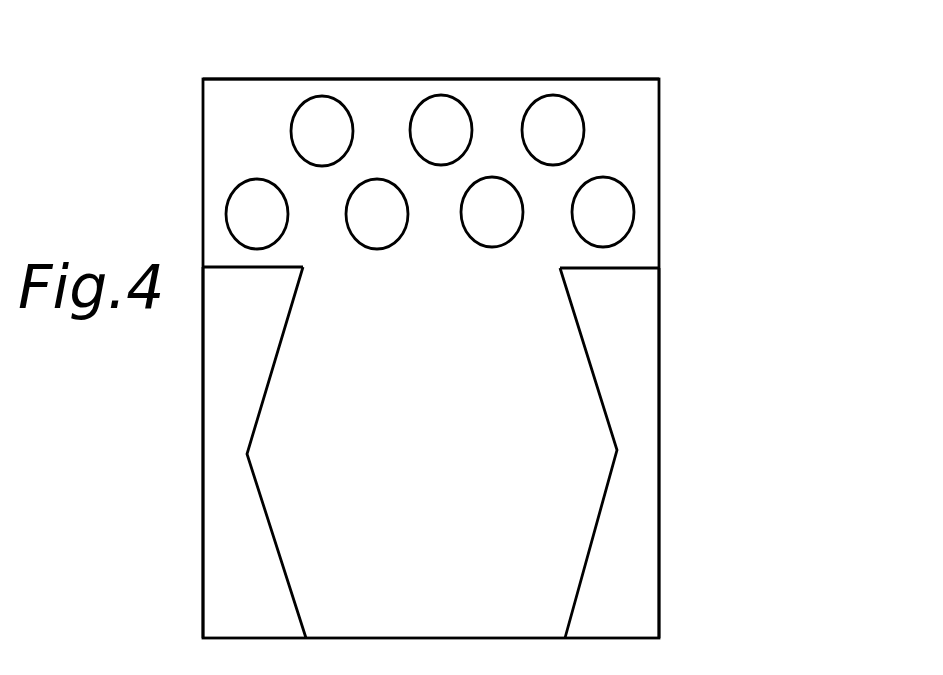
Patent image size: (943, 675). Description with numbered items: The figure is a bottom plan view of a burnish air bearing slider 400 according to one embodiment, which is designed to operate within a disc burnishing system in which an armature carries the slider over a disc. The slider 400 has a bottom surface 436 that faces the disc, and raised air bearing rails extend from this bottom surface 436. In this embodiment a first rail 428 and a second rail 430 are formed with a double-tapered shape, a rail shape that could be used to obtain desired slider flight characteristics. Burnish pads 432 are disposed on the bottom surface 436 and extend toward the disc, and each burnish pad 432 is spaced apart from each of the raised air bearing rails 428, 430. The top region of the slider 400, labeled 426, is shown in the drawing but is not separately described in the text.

The burnish air bearing slider 400 is at (707, 100).
The top wall 426 is at (366, 78).
The first rail 428 is at (645, 458).
The second rail 430 is at (215, 512).
The burnish pad 432 is at (459, 102).
The bottom surface 436 is at (460, 391).